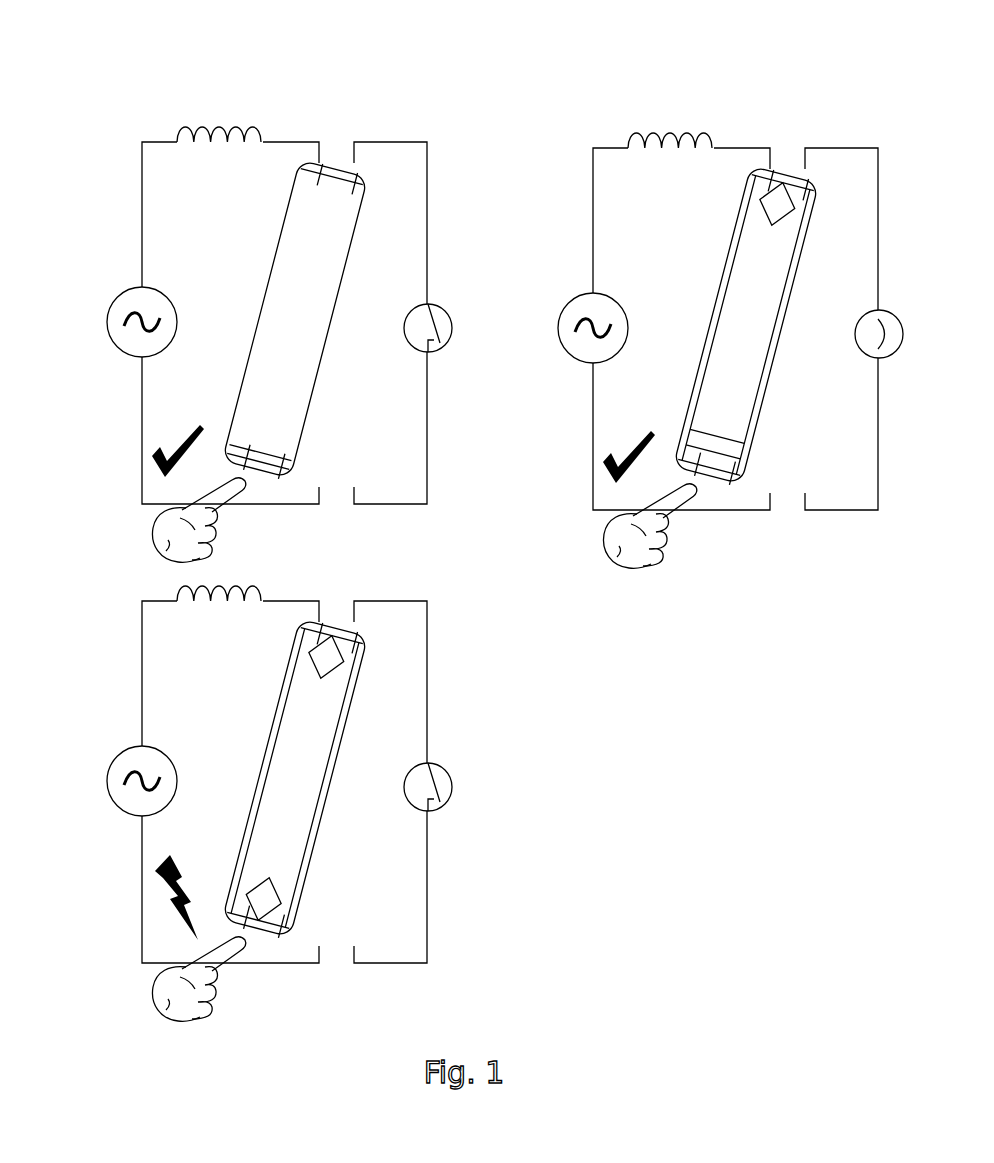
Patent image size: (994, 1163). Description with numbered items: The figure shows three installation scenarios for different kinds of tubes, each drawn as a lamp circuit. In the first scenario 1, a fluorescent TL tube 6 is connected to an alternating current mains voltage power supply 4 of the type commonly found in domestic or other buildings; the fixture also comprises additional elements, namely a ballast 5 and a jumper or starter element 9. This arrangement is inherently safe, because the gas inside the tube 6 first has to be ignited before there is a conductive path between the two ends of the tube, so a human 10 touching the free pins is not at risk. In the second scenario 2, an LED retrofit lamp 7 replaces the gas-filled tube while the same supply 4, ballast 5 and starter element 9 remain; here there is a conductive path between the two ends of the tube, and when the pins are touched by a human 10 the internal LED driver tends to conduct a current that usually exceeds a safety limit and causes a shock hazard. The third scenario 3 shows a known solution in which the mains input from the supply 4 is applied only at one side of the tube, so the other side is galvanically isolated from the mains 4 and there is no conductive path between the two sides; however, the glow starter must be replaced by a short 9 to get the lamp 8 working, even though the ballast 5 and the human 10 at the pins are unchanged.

The fluorescent TL tube scenario 1 is at (329, 116).
The LED retrofit lamp scenario 2 is at (441, 579).
The single-sided mains input scenario 3 is at (746, 132).
The AC mains voltage power supply 4 is at (118, 298).
The ballast 5 is at (218, 125).
The fluorescent tube 6 is at (265, 227).
The LED retrofit lamp 7 is at (265, 690).
The lamp 8 is at (722, 238).
The starter element 9 is at (430, 305).
The human 10 is at (222, 518).